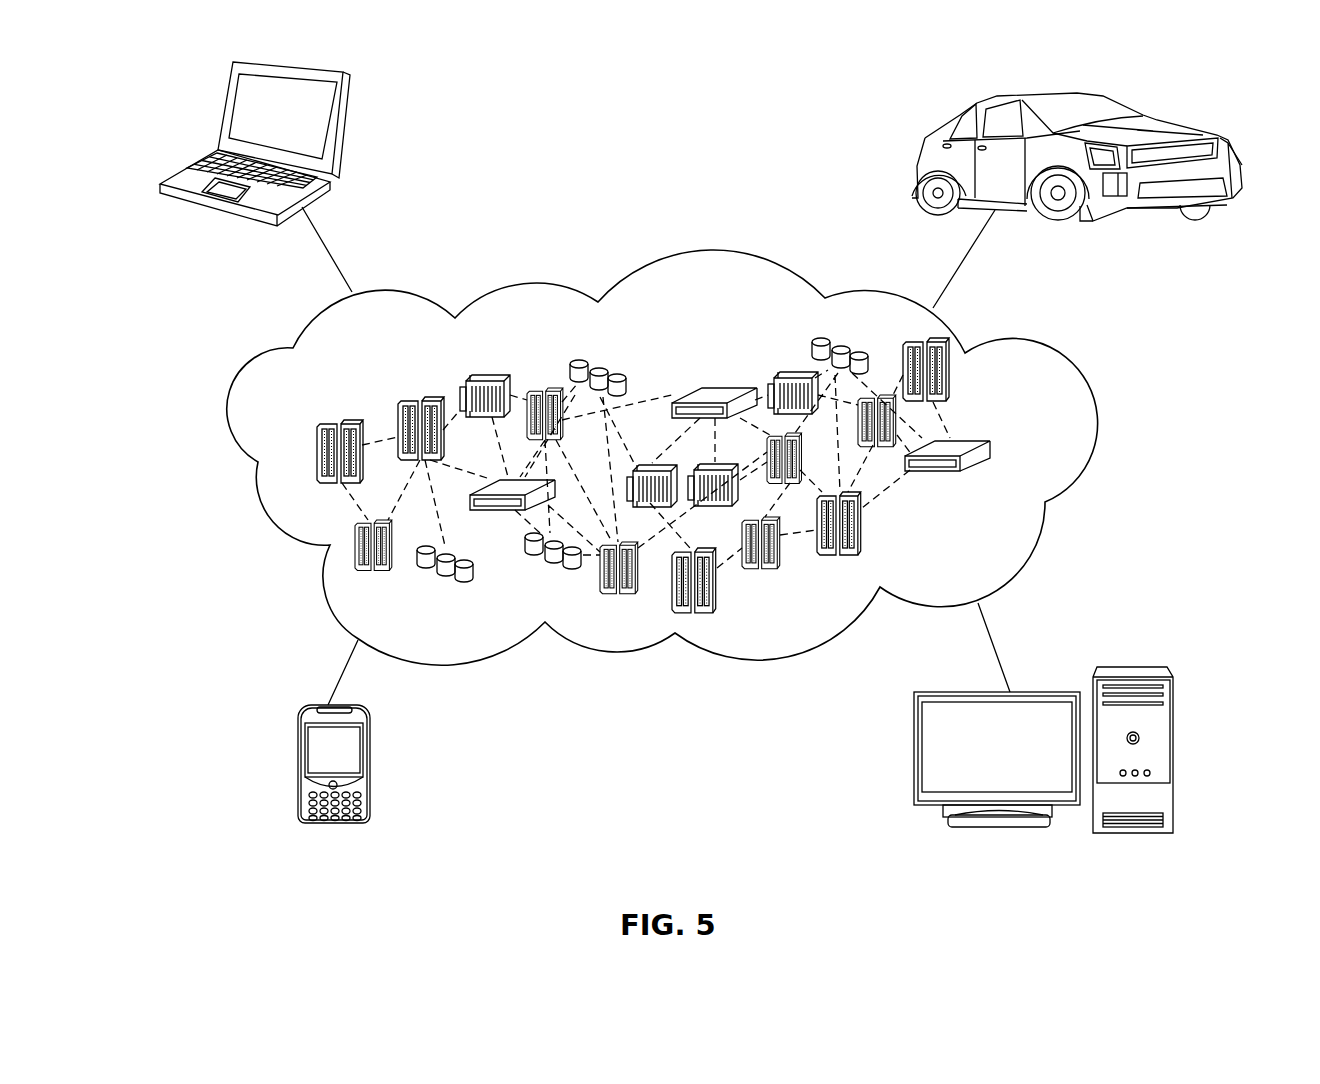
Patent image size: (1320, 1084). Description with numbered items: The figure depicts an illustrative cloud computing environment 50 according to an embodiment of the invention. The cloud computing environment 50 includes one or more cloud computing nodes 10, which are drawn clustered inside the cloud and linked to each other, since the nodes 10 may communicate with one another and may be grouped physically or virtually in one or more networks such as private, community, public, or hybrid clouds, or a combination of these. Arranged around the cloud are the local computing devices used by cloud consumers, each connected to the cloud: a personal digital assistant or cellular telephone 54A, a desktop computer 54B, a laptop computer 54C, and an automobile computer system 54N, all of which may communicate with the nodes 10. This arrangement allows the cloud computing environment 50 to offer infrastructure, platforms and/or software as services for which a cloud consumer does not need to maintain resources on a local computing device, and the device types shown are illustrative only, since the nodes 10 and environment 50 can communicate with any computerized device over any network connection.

The cloud computing environment 50 is at (1055, 366).
The cloud computing node 10 is at (1030, 452).
The personal digital assistant (PDA) or cellular telephone 54A is at (298, 768).
The desktop computer 54B is at (1137, 665).
The laptop computer 54C is at (338, 130).
The automobile computer system 54N is at (926, 140).